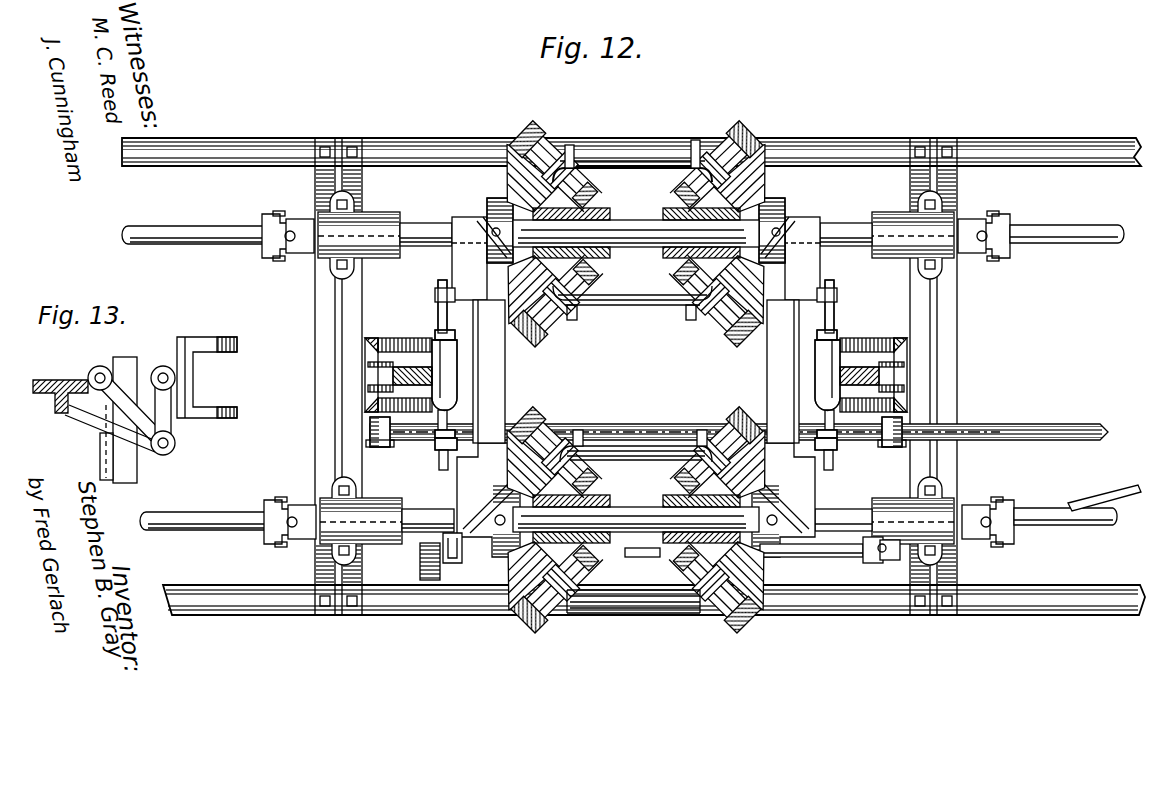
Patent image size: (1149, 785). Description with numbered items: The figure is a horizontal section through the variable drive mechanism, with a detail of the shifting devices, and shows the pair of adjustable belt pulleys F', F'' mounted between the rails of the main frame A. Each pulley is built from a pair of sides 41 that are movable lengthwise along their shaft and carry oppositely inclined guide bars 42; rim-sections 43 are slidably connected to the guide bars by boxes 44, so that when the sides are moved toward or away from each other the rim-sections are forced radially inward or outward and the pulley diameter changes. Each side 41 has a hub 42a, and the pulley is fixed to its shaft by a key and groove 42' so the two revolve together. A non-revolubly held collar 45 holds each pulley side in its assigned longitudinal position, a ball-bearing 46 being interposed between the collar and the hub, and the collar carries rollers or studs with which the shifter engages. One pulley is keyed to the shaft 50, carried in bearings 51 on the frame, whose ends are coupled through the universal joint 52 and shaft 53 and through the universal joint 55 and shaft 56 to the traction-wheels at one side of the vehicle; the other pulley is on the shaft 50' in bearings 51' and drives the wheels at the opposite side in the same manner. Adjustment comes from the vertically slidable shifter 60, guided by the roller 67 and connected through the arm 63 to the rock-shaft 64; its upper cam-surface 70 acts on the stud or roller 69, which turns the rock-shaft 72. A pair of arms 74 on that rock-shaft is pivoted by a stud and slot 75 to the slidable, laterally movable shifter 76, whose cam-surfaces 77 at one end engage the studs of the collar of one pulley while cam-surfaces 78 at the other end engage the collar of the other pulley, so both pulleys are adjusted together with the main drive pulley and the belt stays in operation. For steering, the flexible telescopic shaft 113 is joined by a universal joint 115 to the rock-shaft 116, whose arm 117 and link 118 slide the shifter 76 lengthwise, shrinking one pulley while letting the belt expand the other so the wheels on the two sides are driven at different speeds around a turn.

In FIG. 12, the frame A is at (1082, 148).
In FIG. 12, the pulley side 41 is at (530, 345).
In FIG. 12, the inclined guide bar 42 is at (636, 395).
In FIG. 12, the key and groove 42' is at (636, 355).
In FIG. 12, the hub 42a is at (608, 253).
In FIG. 12, the rim-section 43 is at (627, 158).
In FIG. 12, the box 44 is at (568, 153).
In FIG. 12, the adjusting collar 45 is at (487, 210).
In FIG. 12, the ball-bearing 46 is at (800, 214).
In FIG. 12, the shaft 50 is at (646, 166).
In FIG. 12, the shaft 50' is at (612, 583).
In FIG. 12, the bearing 51 is at (613, 257).
In FIG. 12, the bearing 51' is at (641, 554).
In FIG. 12, the universal joint 52 is at (992, 238).
In FIG. 12, the shaft 53 is at (1092, 242).
In FIG. 12, the universal joint 55 is at (275, 258).
In FIG. 12, the shaft 56 is at (168, 248).
In FIG. 12, the shifter 60 is at (367, 379).
In FIG. 13, the shifter 60 is at (128, 478).
In FIG. 12, the arm 63 is at (372, 426).
In FIG. 12, the rock-shaft 64 is at (1042, 428).
In FIG. 12, the guide roller 67 is at (395, 377).
In FIG. 13, the guide roller 67 is at (95, 368).
In FIG. 12, the stud or roller 69 is at (458, 378).
In FIG. 13, the stud or roller 69 is at (165, 370).
In FIG. 12, the cam-surface 70 is at (482, 391).
In FIG. 13, the cam-surface 70 is at (148, 389).
In FIG. 13, the rock-shaft 72 is at (110, 445).
In FIG. 12, the arm 74 is at (434, 333).
In FIG. 13, the arm 74 is at (168, 420).
In FIG. 12, the stud and slot connection 75 is at (437, 300).
In FIG. 13, the shifter 76 is at (193, 379).
In FIG. 12, the cam-surface 77 is at (479, 219).
In FIG. 12, the cam-surface 78 is at (497, 508).
In FIG. 12, the flexible telescopic shaft 113 is at (1127, 494).
In FIG. 12, the universal joint 115 is at (880, 566).
In FIG. 12, the rock-shaft 116 is at (643, 556).
In FIG. 12, the arm 117 is at (452, 565).
In FIG. 12, the link 118 is at (447, 487).
In FIG. 12, the adjustable pulley F' is at (657, 156).
In FIG. 12, the lower hub assembly F'' is at (644, 584).